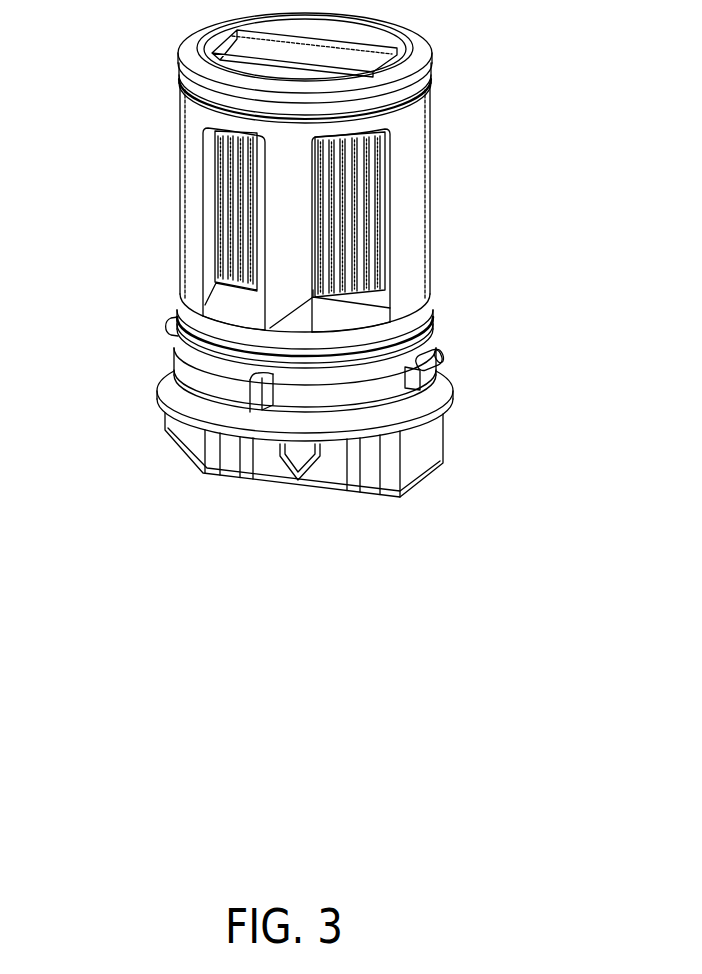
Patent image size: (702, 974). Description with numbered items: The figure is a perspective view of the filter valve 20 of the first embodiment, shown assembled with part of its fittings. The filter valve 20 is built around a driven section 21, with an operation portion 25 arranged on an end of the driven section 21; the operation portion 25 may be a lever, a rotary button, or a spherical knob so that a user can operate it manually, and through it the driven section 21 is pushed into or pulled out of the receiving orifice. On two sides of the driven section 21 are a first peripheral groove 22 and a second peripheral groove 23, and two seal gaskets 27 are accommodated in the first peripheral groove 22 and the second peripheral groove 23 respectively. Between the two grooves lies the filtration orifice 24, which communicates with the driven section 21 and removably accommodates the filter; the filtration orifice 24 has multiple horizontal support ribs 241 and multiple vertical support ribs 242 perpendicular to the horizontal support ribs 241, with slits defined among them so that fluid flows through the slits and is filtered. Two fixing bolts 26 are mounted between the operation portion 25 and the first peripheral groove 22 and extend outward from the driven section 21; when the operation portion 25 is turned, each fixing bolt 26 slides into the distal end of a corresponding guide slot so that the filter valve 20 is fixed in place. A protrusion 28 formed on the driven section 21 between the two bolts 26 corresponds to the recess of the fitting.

The filter valve 20 is at (152, 141).
The driven section 21 is at (418, 170).
The first peripheral groove 22 is at (380, 358).
The second peripheral groove 23 is at (425, 97).
The filtration orifice 24 is at (198, 190).
The horizontal support ribs 241 is at (363, 205).
The vertical support ribs 242 is at (345, 232).
The operation portion 25 is at (270, 465).
The fixing bolt 26 is at (168, 325).
The seal gaskets 27 is at (392, 118).
The protrusion 28 is at (250, 402).